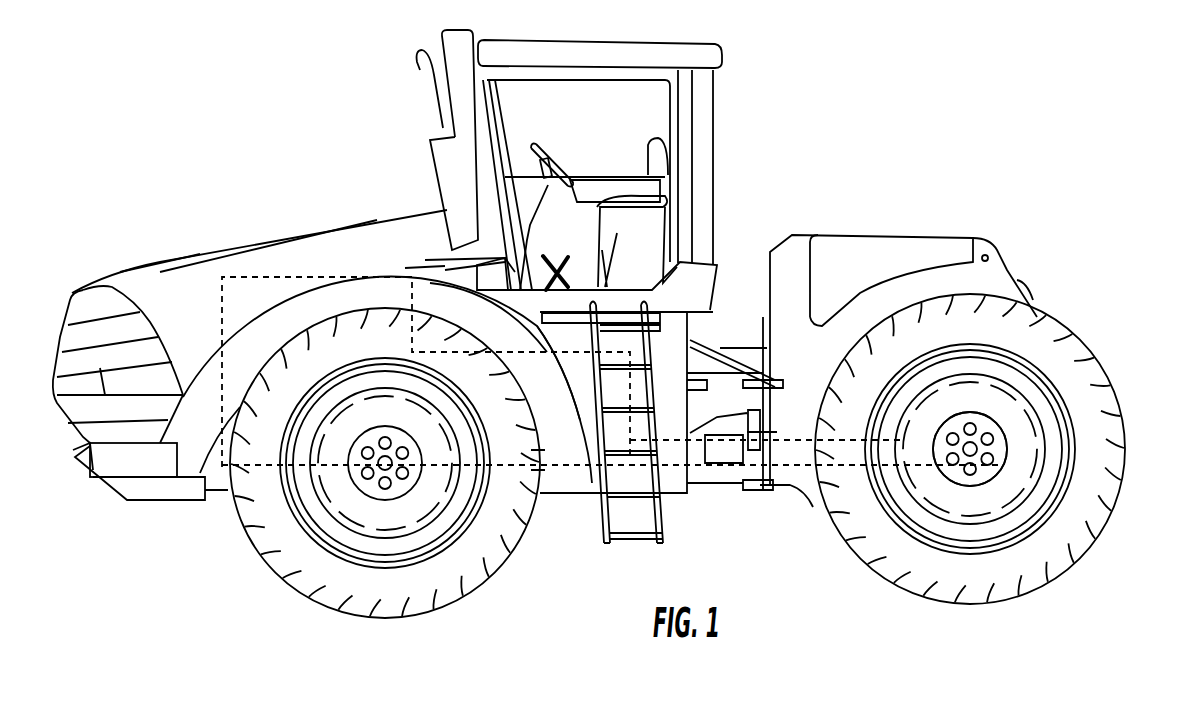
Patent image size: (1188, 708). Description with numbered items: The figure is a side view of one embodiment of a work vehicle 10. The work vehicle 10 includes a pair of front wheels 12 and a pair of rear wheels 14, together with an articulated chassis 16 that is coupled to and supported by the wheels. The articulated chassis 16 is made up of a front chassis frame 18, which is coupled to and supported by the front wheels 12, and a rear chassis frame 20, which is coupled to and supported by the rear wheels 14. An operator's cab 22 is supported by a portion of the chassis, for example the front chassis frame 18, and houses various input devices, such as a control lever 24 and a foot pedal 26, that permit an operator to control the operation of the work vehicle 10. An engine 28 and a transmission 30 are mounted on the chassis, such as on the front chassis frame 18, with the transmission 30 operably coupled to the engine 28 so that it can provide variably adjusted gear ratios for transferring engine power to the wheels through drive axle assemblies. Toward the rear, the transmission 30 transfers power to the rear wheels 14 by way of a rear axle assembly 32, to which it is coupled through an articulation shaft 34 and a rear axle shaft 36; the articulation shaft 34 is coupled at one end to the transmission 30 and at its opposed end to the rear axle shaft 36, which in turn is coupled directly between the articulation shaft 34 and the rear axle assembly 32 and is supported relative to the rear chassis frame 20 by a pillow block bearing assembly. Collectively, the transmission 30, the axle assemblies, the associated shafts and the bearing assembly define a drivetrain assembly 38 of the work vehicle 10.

The work vehicle 10 is at (383, 265).
The front wheels 12 is at (233, 517).
The rear wheels 14 is at (1127, 440).
The articulated chassis 16 is at (610, 575).
The front chassis frame 18 is at (677, 503).
The rear chassis frame 20 is at (823, 507).
The operator's cab 22 is at (717, 170).
The control lever 24 is at (577, 158).
The foot pedal 26 is at (563, 273).
The engine 28 is at (257, 277).
The transmission 30 is at (532, 513).
The rear axle assembly 32 is at (1027, 413).
The articulation shaft 34 is at (673, 463).
The rear axle shaft 36 is at (793, 437).
The drivetrain assembly 38 is at (400, 235).